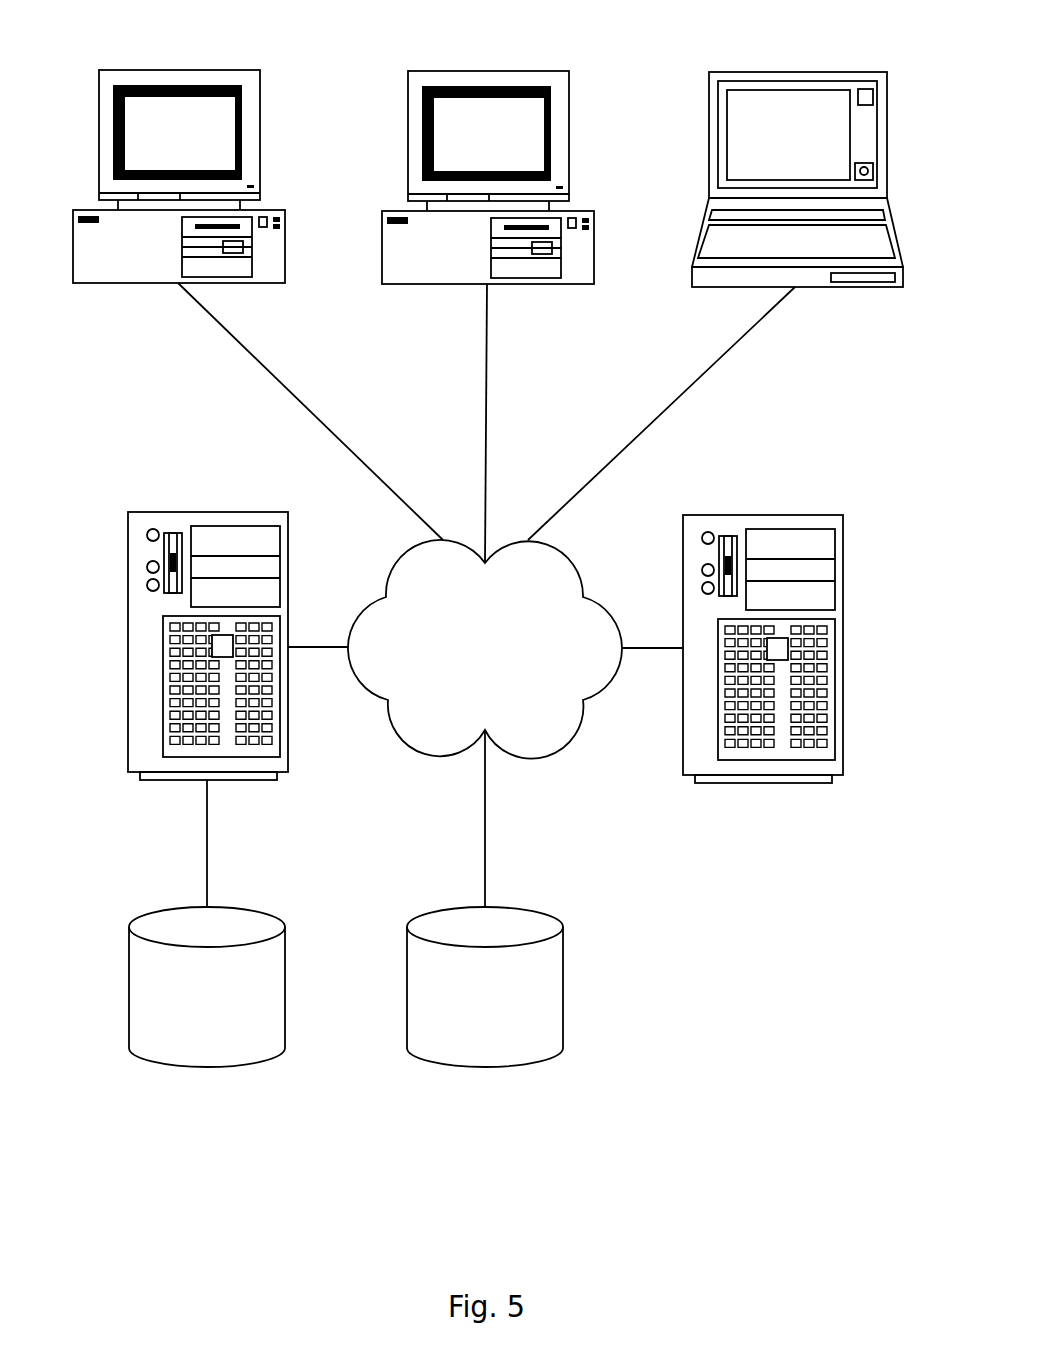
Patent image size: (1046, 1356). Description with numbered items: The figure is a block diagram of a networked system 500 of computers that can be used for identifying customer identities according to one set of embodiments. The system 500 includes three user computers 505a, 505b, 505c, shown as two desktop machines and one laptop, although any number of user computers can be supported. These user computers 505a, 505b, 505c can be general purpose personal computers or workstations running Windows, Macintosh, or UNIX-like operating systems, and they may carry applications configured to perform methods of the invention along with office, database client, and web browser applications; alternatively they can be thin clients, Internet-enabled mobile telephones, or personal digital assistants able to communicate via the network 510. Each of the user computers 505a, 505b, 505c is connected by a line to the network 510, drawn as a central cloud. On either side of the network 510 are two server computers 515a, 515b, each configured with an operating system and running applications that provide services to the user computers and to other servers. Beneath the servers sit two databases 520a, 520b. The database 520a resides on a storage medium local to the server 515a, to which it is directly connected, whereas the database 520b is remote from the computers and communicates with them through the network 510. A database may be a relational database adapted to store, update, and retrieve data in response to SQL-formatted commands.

The system 500 is at (487, 594).
The user computer 505a is at (285, 228).
The user computer 505b is at (381, 230).
The user computer 505c is at (709, 180).
The network 510 is at (522, 755).
The server computer 515a is at (128, 647).
The server computer 515b is at (843, 648).
The database 520a is at (205, 1067).
The database 520b is at (483, 1067).